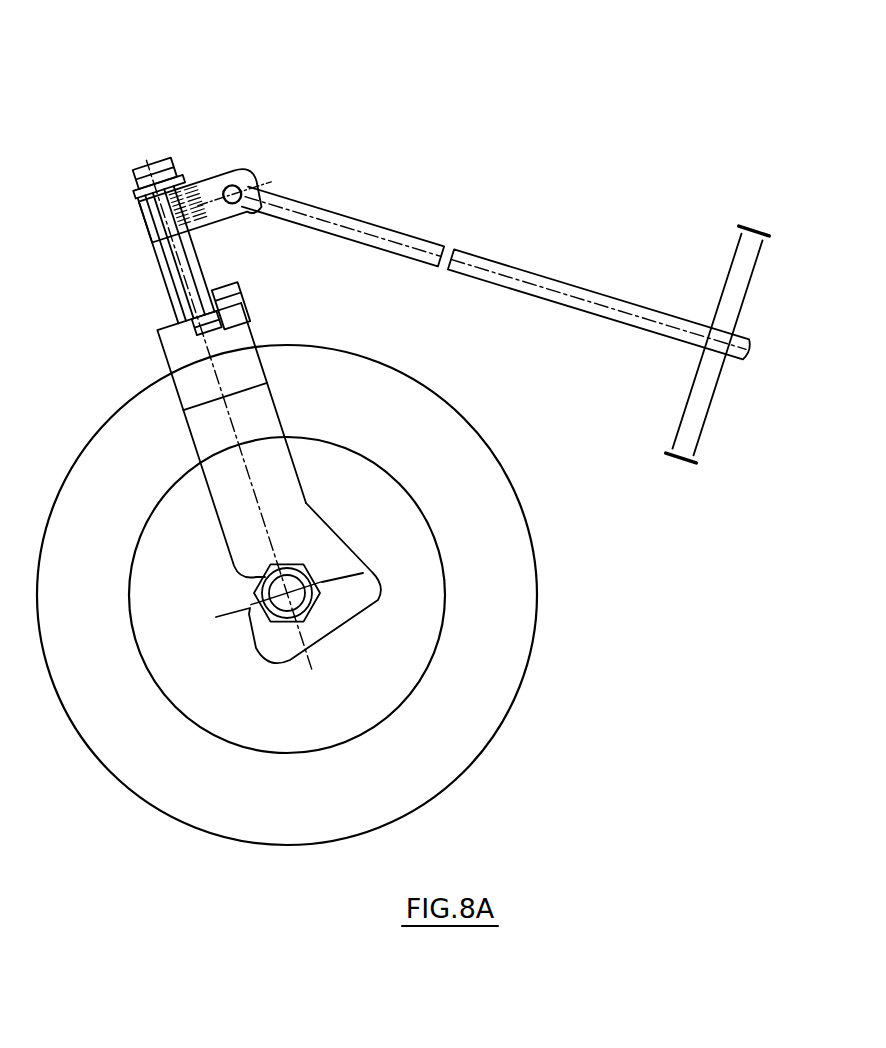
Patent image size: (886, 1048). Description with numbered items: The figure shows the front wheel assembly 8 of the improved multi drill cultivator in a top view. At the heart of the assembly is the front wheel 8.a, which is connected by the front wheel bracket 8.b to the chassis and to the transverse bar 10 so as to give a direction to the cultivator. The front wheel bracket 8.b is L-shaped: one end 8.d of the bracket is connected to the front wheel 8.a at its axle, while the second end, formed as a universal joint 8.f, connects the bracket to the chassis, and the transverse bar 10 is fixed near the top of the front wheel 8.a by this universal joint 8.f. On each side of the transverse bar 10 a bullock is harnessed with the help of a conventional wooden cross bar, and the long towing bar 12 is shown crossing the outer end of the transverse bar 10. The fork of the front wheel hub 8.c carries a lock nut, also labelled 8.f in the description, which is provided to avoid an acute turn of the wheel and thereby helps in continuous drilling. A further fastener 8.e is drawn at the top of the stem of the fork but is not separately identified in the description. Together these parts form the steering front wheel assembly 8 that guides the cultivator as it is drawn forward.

The front wheel assembly 8 is at (407, 428).
The front wheel 8.a is at (407, 368).
The front wheel bracket 8.b is at (278, 408).
The front wheel hub 8.c is at (205, 175).
The one end of front wheel bracket 8.d is at (318, 573).
The lock nut 8.e is at (142, 207).
The universal joint 8.f is at (240, 175).
The transverse bar 10 is at (618, 325).
The long towing bar 12 is at (708, 405).